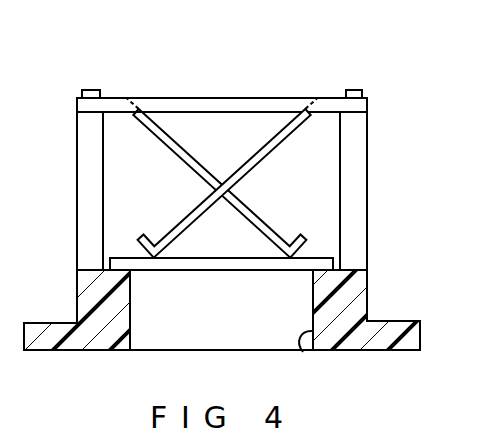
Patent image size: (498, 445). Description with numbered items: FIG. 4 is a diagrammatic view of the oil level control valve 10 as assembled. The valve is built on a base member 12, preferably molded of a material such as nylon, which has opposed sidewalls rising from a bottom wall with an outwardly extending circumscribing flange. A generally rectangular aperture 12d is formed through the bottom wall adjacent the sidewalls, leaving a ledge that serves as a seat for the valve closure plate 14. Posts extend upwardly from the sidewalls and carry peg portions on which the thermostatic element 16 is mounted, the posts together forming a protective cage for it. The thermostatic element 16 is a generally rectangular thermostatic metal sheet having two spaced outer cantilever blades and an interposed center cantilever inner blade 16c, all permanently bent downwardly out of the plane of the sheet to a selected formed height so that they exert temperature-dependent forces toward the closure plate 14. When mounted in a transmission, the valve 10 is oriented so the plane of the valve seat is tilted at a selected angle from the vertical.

The oil level control valve 10 is at (249, 222).
The base member 12 is at (249, 222).
The rectangular aperture 12d is at (303, 352).
The valve closure plate 14 is at (276, 234).
The thermostatic element 16 is at (255, 180).
The center cantilever inner blade 16c is at (270, 236).